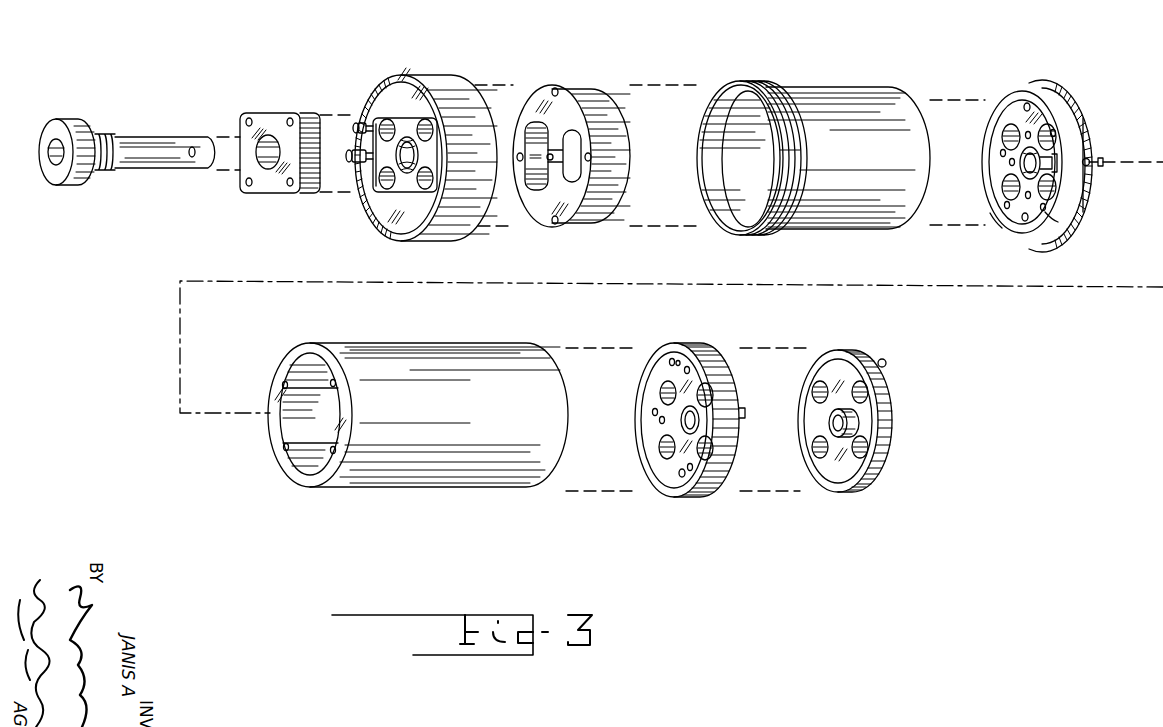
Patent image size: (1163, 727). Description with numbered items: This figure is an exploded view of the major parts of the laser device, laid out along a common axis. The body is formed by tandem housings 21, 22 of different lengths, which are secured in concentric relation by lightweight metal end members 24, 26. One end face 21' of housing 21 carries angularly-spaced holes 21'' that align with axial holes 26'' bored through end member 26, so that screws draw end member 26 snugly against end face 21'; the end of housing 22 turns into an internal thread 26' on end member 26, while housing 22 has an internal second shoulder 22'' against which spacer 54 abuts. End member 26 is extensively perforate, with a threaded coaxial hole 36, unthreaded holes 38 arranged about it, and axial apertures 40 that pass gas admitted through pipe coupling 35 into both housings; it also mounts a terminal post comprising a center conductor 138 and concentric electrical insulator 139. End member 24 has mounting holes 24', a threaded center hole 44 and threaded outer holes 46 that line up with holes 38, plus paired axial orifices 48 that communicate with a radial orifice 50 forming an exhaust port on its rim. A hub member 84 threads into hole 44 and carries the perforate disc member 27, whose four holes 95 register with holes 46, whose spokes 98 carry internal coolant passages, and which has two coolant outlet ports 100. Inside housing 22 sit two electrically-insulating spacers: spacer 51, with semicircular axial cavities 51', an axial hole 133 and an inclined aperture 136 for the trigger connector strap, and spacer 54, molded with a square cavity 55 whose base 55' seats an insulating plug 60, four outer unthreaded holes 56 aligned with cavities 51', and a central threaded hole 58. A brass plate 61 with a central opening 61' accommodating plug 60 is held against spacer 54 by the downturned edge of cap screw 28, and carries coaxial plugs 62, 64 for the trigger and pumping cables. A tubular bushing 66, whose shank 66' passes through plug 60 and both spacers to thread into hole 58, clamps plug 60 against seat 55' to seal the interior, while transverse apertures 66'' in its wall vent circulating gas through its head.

The housing 21 is at (418, 432).
The end face of housing 21 21' is at (310, 437).
The angularly-spaced holes 21'' is at (293, 391).
The housing 22 is at (813, 145).
The second shoulder 22'' is at (711, 159).
The end member 24 is at (662, 451).
The axial holes 24' is at (705, 495).
The end member 26 is at (1037, 148).
The internal thread 26' is at (978, 232).
The axial holes 26'' is at (1082, 234).
The disc member 27 is at (888, 468).
The cap screw 28 is at (438, 85).
The pipe coupling 35 is at (1093, 169).
The threaded coaxial hole 36 is at (1020, 167).
The unthreaded holes 38 is at (1002, 136).
The axial apertures 40 is at (1024, 104).
The threaded center hole 44 is at (681, 425).
The threaded outer holes 46 is at (662, 392).
The axial orifices 48 is at (667, 360).
The radial orifice 50 is at (744, 413).
The electrically-insulating spacer 51 is at (571, 139).
The semicircular axial cavities 51' is at (547, 113).
The electrically-insulating spacer 54 is at (463, 217).
The central substantially square cavity 55 is at (356, 198).
The base of cavity 55 55' is at (381, 96).
The outer axial unthreaded holes 56 is at (420, 185).
The central axial threaded hole 58 is at (392, 192).
The plug 60 is at (266, 122).
The brass plate 61 is at (405, 63).
The central opening 61' is at (429, 88).
The coaxial plug 62 is at (358, 125).
The coaxial plug 64 is at (353, 160).
The tubular bushing 66 is at (71, 136).
The shank of bushing 66 66' is at (133, 131).
The apertures 66'' is at (169, 130).
The hub member 84 is at (848, 419).
The unthreaded holes 95 is at (813, 392).
The spokes 98 is at (813, 425).
The coolant outlet ports 100 is at (884, 360).
The axial hole 133 is at (555, 88).
The inclined aperture 136 is at (548, 160).
The center conductor 138 is at (1054, 133).
The concentric electrical insulator 139 is at (1052, 162).